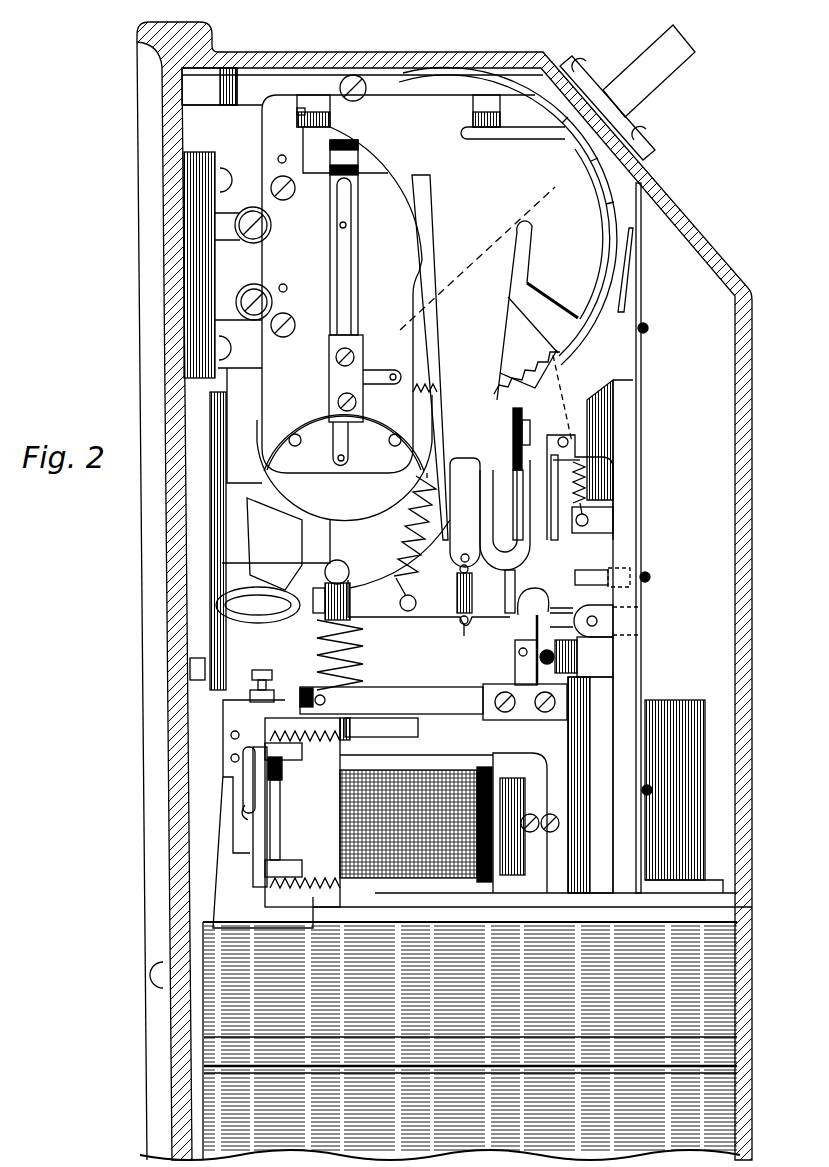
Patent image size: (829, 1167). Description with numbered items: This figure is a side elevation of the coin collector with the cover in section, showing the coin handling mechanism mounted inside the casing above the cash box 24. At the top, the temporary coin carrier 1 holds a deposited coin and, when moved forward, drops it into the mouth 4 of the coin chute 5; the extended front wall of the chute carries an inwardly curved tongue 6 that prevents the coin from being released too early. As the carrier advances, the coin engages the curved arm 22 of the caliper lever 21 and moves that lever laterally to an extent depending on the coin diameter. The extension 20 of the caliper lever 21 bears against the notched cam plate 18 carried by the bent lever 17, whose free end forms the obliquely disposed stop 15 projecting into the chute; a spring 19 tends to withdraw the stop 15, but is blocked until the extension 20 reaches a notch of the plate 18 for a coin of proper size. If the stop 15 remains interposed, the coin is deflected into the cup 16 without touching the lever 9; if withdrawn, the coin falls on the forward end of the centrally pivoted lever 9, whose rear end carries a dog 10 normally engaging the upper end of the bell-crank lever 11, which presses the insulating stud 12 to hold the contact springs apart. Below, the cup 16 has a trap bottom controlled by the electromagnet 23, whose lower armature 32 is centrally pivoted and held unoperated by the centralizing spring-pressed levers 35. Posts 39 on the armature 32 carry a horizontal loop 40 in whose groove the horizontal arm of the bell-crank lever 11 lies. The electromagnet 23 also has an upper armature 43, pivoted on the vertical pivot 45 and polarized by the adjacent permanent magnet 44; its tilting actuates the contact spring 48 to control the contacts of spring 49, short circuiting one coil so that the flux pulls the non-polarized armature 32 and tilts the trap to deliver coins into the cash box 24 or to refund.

The temporary coin carrier 1 is at (533, 88).
The mouth of the coin chute 4 is at (553, 426).
The coin chute 5 is at (640, 432).
The inwardly curved tongue 6 is at (624, 290).
The lever 9 is at (552, 618).
The dog 10 is at (522, 620).
The bell-crank lever 11 is at (533, 635).
The insulating stud 12 is at (560, 690).
The stop or guide 15 is at (605, 574).
The cup 16 is at (580, 766).
The bent lever 17 is at (582, 533).
The cam plate 18 is at (580, 458).
The spring 19 is at (588, 490).
The extension of the caliper lever 20 is at (523, 500).
The caliper lever 21 is at (446, 371).
The curved arm 22 is at (550, 274).
The electromagnet 23 is at (458, 772).
The cash box 24 is at (446, 1026).
The armature 32 is at (262, 827).
The centralizing spring-pressed levers 35 is at (223, 728).
The posts 39 is at (224, 800).
The loop 40 is at (345, 739).
The upper armature 43 is at (262, 784).
The permanent magnet 44 is at (494, 780).
The vertical pivot 45 is at (265, 674).
The contact spring 48 is at (313, 690).
The contact spring 49 is at (400, 697).